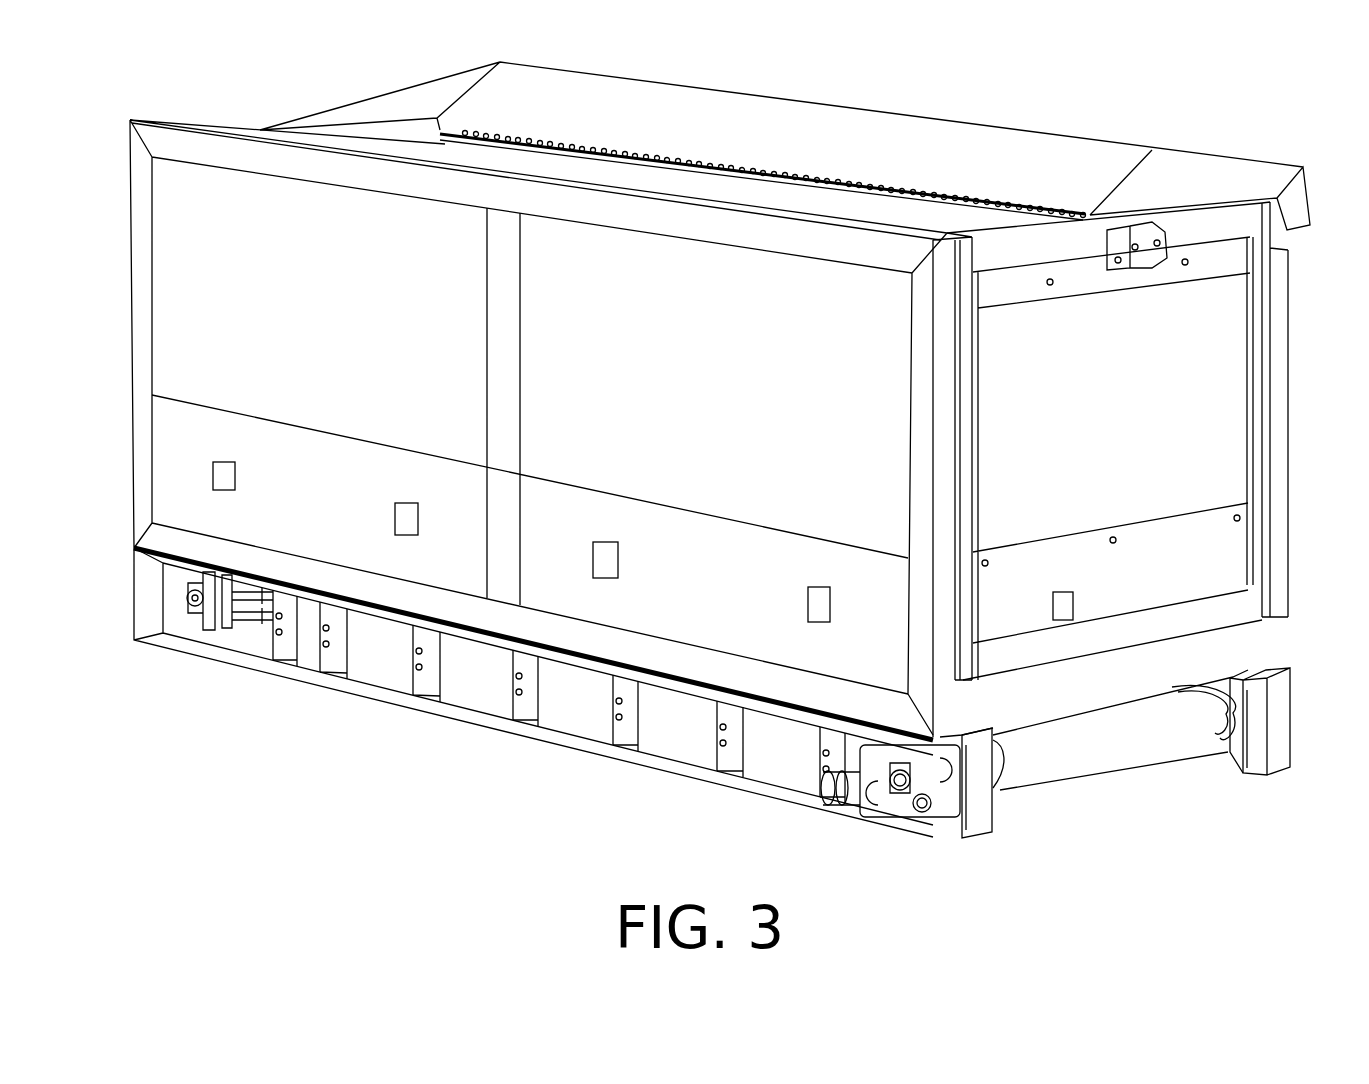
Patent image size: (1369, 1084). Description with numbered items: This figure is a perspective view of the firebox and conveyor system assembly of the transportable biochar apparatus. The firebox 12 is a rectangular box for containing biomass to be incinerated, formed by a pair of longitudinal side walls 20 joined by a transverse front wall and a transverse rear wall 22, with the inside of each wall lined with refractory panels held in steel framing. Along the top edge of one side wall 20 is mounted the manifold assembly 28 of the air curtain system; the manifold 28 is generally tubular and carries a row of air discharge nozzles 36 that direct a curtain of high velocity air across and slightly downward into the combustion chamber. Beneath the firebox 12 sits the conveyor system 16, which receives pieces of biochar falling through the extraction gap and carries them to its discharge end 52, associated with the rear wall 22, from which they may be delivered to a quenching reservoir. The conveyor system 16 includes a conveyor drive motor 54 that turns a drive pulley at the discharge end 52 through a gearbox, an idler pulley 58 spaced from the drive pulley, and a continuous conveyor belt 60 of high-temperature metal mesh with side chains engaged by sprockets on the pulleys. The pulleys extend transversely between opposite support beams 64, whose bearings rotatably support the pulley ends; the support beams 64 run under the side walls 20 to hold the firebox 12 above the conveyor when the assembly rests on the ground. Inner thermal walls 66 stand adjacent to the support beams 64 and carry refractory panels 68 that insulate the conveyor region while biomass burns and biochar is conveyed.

The firebox 12 is at (205, 343).
The conveyor system 16 is at (455, 685).
The longitudinal side wall 20 is at (663, 365).
The transverse rear wall 22 is at (1090, 406).
The manifold assembly 28 is at (927, 150).
The air discharge nozzles 36 is at (725, 165).
The discharge end 52 is at (1100, 752).
The conveyor drive motor 54 is at (833, 783).
The idler pulley 58 is at (190, 603).
The conveyor belt 60 is at (1043, 740).
The support beams 64 is at (565, 735).
The inner thermal walls 66 is at (982, 787).
The refractory panels 68 is at (972, 728).